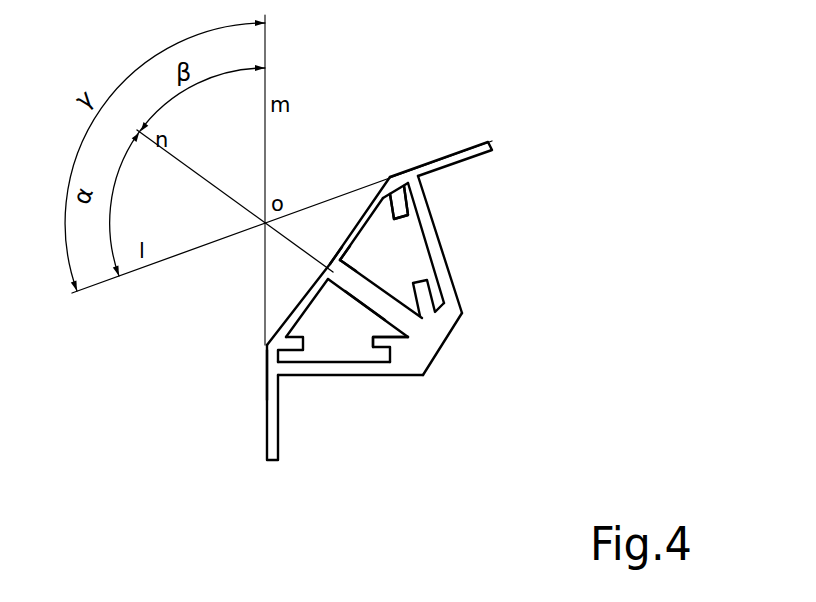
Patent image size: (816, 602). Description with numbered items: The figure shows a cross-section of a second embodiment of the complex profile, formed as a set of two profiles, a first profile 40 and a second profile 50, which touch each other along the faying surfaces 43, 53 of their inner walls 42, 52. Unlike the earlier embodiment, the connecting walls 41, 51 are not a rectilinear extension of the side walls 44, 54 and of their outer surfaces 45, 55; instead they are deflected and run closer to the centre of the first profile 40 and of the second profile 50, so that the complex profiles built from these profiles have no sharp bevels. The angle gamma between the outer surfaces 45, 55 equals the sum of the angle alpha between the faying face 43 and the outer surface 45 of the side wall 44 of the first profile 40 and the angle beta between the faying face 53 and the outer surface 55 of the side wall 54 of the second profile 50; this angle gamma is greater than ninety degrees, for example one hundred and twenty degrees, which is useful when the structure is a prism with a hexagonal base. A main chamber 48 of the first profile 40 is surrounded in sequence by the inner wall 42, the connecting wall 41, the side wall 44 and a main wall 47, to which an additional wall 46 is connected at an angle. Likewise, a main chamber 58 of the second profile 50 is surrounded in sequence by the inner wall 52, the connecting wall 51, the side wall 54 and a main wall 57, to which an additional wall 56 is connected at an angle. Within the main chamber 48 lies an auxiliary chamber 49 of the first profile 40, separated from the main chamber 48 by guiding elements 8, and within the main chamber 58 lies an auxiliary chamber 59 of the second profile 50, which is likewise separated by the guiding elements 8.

The guiding elements 8 is at (407, 200).
The first profile 40 is at (369, 242).
The connecting wall 41 is at (345, 262).
The inner wall 42 is at (336, 262).
The faying surface 43 is at (328, 258).
The side wall 44 is at (413, 178).
The outer surface 45 is at (390, 194).
The additional wall 46 is at (456, 163).
The main wall 47 is at (430, 214).
The main chamber 48 is at (451, 330).
The auxiliary chamber 49 is at (420, 282).
The second profile 50 is at (308, 423).
The connecting wall 51 is at (320, 277).
The inner wall 52 is at (338, 280).
The faying surface 53 is at (364, 305).
The side wall 54 is at (281, 345).
The outer surface 55 is at (272, 357).
The additional wall 56 is at (272, 425).
The main wall 57 is at (326, 372).
The main chamber 58 is at (395, 328).
The auxiliary chamber 59 is at (386, 362).